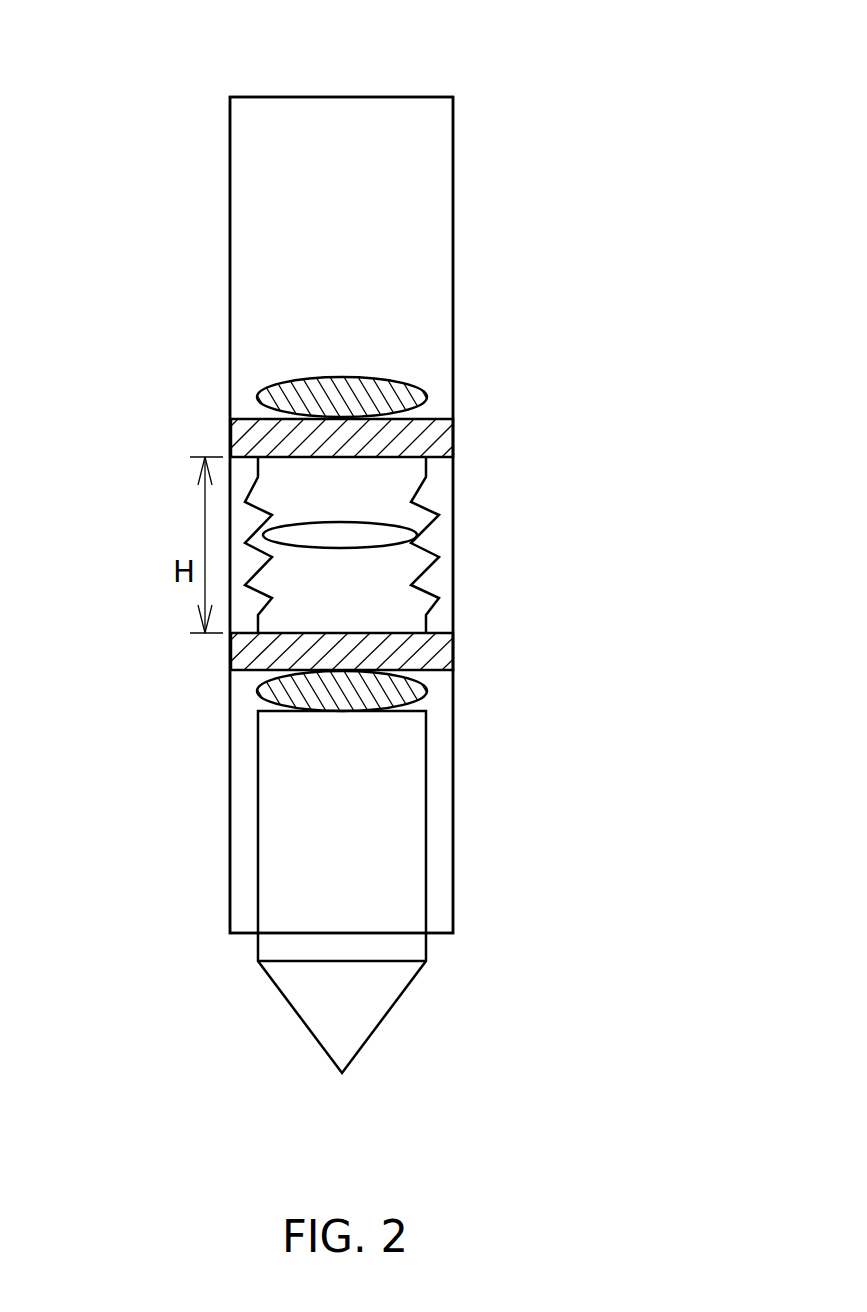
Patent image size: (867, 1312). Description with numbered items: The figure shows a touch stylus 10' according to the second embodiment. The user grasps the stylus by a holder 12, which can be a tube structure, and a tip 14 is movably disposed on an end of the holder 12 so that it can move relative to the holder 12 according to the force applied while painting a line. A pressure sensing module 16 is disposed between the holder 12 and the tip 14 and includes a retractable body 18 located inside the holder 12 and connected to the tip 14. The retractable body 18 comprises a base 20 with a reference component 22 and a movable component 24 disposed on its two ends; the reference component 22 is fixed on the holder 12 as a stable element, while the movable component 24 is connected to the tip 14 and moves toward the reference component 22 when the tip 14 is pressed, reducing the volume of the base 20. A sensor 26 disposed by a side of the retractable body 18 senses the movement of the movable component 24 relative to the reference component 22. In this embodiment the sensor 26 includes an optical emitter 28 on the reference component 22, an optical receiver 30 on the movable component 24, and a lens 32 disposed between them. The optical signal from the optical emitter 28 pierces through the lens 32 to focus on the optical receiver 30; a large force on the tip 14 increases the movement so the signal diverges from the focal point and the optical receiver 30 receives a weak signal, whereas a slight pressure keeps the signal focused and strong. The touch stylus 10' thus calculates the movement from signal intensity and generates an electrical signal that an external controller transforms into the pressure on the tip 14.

The touch stylus 10' is at (446, 466).
The holder 12 is at (444, 173).
The tip 14 is at (375, 993).
The pressure sensing module 16 is at (588, 518).
The retractable body 18 is at (522, 410).
The base 20 is at (453, 533).
The reference component 22 is at (453, 430).
The movable component 24 is at (453, 647).
The sensor 26 is at (147, 393).
The optical emitter 28 is at (262, 397).
The optical receiver 30 is at (262, 690).
The lens 32 is at (267, 524).